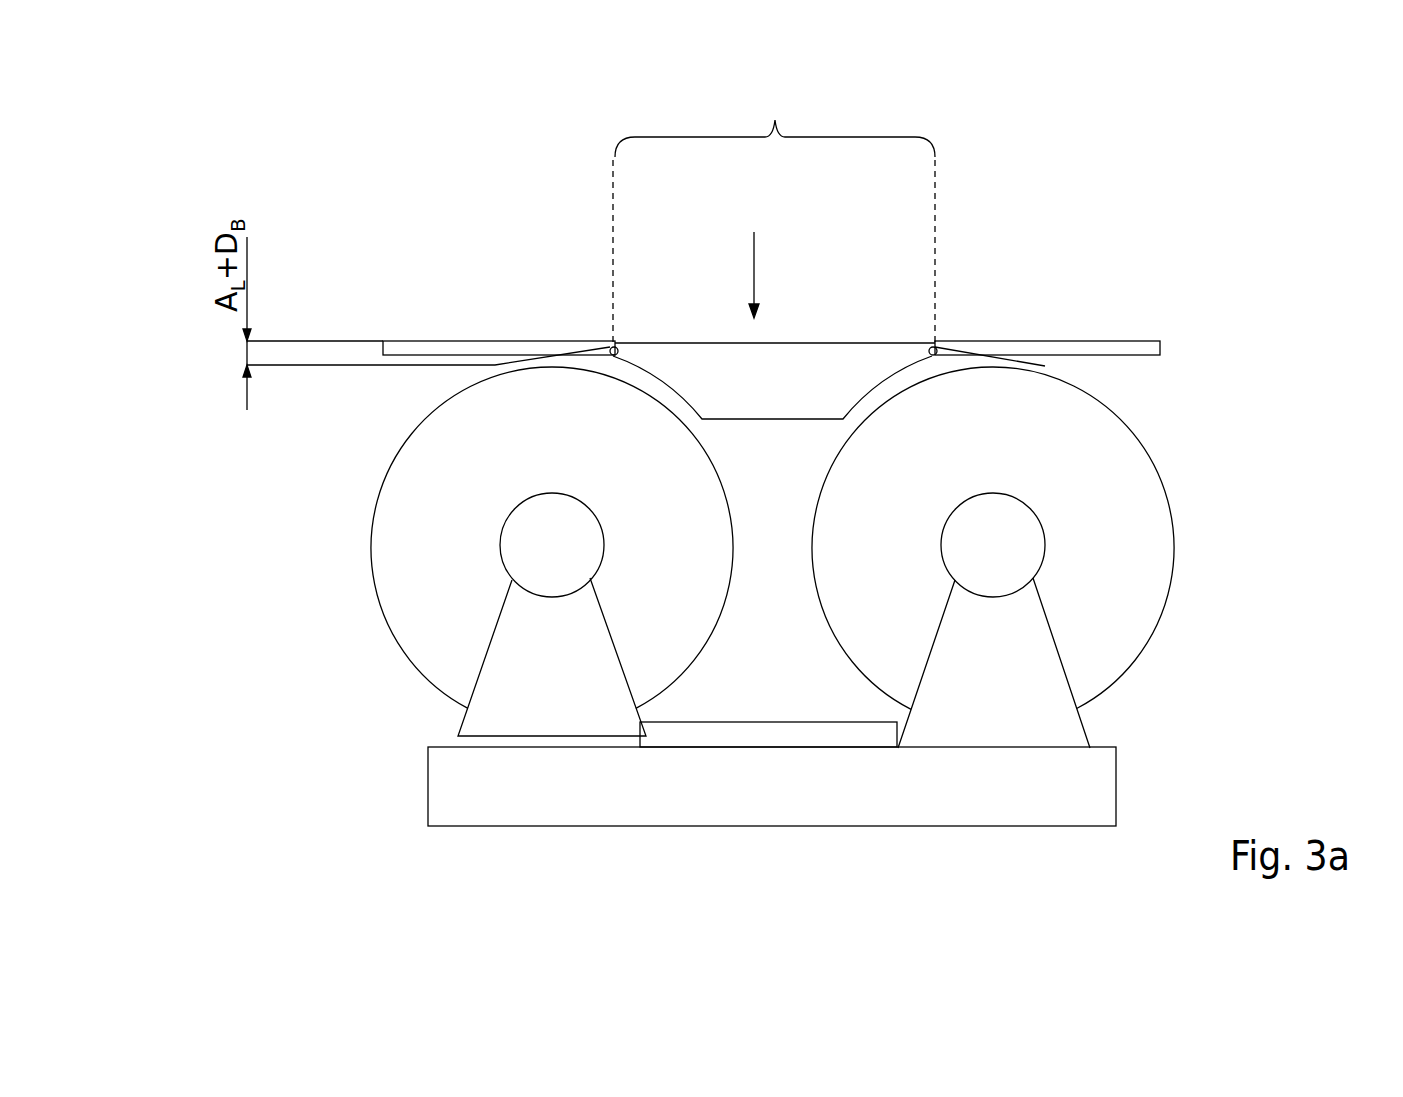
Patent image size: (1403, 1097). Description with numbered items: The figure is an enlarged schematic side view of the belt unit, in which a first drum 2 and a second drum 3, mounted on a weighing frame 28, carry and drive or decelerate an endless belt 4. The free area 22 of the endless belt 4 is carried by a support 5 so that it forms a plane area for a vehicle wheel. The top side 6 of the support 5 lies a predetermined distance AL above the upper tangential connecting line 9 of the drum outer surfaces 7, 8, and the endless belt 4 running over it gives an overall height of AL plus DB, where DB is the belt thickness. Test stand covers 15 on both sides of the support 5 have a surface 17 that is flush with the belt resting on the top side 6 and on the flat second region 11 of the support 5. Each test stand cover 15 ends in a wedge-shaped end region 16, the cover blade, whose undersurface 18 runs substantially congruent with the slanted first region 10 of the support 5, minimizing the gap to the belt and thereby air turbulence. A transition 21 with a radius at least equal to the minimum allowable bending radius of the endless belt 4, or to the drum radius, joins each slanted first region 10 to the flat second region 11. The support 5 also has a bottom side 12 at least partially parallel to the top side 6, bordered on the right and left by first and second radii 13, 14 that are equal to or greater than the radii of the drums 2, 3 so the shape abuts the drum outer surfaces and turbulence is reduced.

The first drum 2 is at (415, 598).
The second drum 3 is at (1095, 595).
The endless belt 4 is at (760, 722).
The support 5 is at (757, 256).
The top side of the support 6 is at (852, 342).
The drum outer surface 7 is at (850, 653).
The drum outer surface 8 is at (693, 660).
The upper tangential connecting line 9 is at (587, 344).
The slanted first region 10 is at (627, 340).
The flat second region 11 is at (670, 342).
The bottom side of the support 12 is at (755, 422).
The first radius 13 is at (680, 413).
The second radius 14 is at (865, 413).
The test stand cover 15 is at (395, 348).
The wedge-shaped end region 16 is at (596, 342).
The surface of the test stand cover 17 is at (413, 340).
The undersurface 18 is at (610, 343).
The transition 21 is at (650, 342).
The free area 22 is at (774, 211).
The weighing frame 28 is at (522, 775).